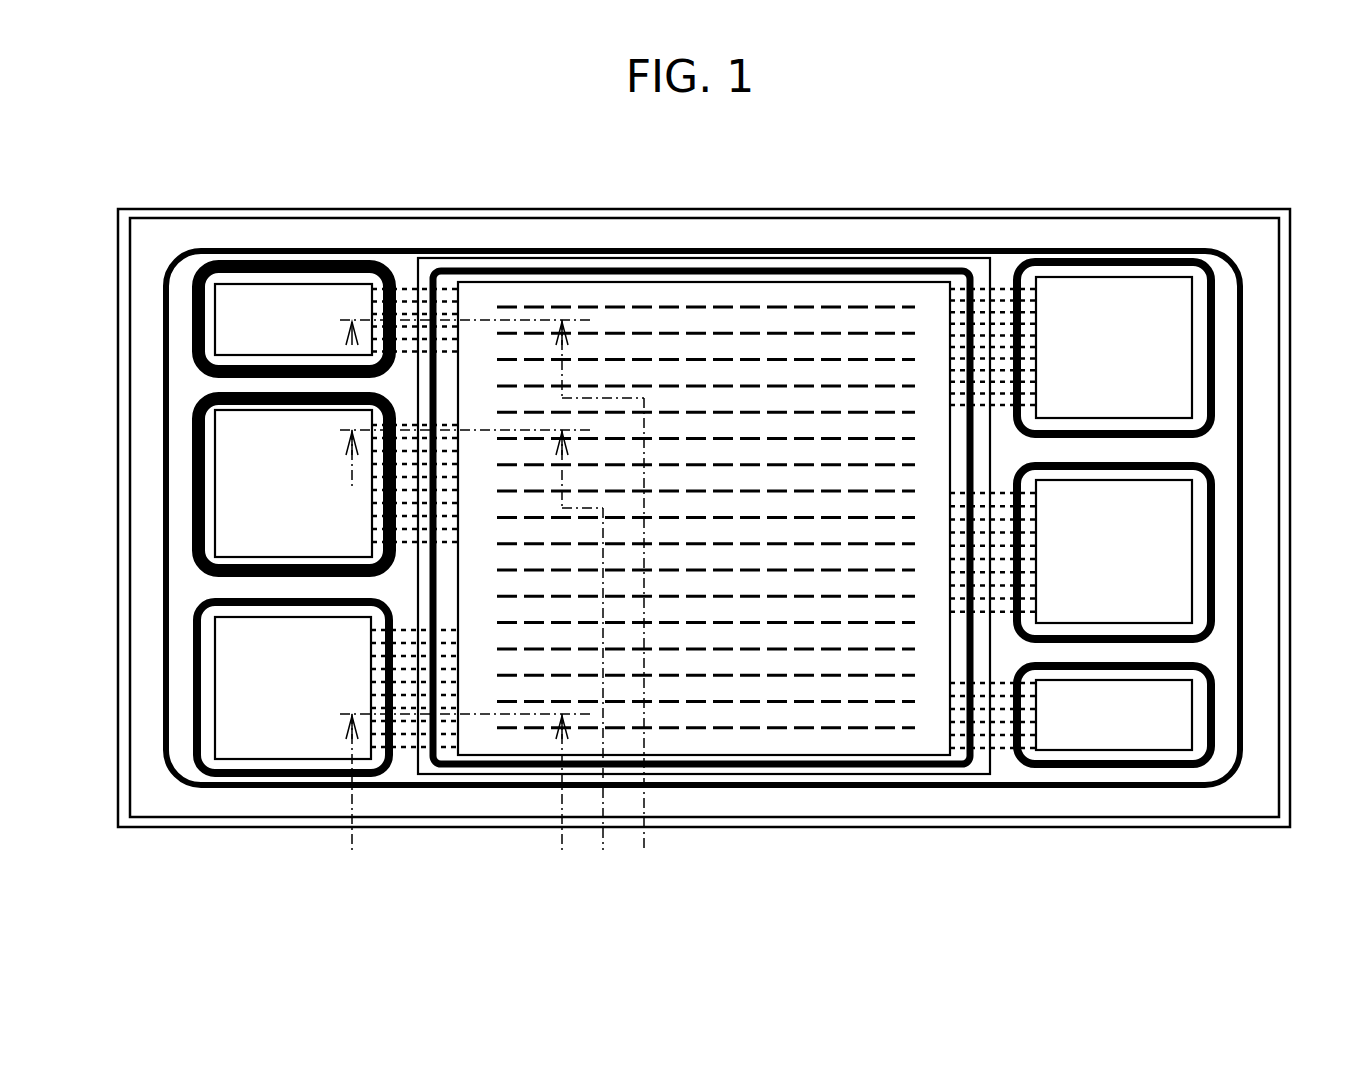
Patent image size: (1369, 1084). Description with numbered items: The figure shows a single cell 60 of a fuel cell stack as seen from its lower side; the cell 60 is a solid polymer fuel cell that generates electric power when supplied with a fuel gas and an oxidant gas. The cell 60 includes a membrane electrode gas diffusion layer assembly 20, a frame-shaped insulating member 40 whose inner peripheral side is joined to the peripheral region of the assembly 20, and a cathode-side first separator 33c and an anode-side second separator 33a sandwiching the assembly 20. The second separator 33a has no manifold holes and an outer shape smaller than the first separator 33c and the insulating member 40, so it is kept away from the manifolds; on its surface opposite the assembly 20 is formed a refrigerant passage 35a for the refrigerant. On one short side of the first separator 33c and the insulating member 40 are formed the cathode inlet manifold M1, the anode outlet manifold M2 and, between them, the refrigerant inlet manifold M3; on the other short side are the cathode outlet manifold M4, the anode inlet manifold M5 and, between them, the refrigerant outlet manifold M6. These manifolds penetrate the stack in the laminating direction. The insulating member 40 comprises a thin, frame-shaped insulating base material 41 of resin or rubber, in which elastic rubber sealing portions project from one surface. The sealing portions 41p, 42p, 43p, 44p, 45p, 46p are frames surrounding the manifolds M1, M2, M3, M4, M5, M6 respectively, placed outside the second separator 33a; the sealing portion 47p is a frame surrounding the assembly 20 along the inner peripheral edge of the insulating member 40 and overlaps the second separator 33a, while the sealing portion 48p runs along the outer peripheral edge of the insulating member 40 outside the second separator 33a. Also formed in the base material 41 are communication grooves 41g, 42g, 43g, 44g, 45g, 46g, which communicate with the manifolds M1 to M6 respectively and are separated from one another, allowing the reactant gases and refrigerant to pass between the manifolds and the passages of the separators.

The cell 60 is at (700, 536).
The insulating member 40 is at (168, 834).
The base material 41 is at (498, 232).
The second separator 33a is at (557, 262).
The first separator 33c is at (481, 826).
The refrigerant passage 35a is at (675, 305).
The membrane electrode gas diffusion layer assembly 20 is at (773, 276).
The sealing portion 47p is at (835, 250).
The sealing portion 48p is at (780, 790).
The sealing portion 41p is at (192, 670).
The sealing portion 42p is at (192, 322).
The sealing portion 43p is at (192, 465).
The sealing portion 44p is at (1215, 322).
The sealing portion 45p is at (1215, 670).
The sealing portion 46p is at (1215, 585).
The communication groove 41g is at (393, 782).
The communication groove 42g is at (405, 262).
The communication groove 43g is at (385, 532).
The communication groove 44g is at (1005, 290).
The communication groove 45g is at (1018, 770).
The communication groove 46g is at (1036, 497).
The cathode inlet manifold M1 is at (250, 730).
The anode outlet manifold M2 is at (252, 305).
The refrigerant inlet manifold M3 is at (262, 437).
The cathode outlet manifold M4 is at (1155, 305).
The anode inlet manifold M5 is at (1155, 727).
The refrigerant outlet manifold M6 is at (1157, 553).